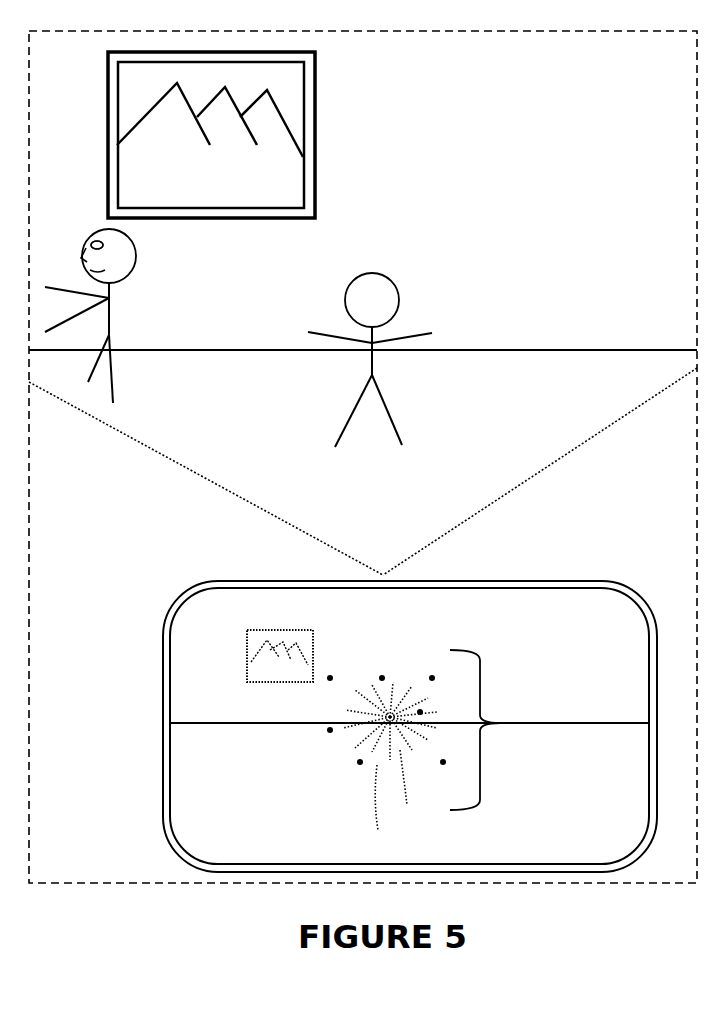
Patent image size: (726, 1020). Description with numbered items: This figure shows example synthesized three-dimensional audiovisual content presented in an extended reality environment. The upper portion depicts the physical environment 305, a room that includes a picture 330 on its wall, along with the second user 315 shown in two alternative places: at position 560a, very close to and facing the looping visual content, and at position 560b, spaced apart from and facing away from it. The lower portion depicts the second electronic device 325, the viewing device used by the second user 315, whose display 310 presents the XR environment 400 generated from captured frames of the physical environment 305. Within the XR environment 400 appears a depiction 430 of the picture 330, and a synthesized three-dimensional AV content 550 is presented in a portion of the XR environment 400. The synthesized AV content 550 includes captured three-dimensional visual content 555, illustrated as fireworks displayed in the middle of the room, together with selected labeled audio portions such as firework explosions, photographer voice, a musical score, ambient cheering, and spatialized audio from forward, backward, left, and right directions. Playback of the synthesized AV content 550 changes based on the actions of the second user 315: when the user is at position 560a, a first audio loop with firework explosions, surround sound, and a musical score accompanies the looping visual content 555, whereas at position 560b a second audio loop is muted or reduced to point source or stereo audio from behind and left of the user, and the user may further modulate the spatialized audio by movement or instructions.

The physical environment 305 is at (561, 70).
The picture 330 is at (315, 130).
The second user 315 is at (88, 243).
The position 560a is at (434, 293).
The position 560b is at (160, 265).
The second electronic device 325 is at (163, 620).
The display 310 is at (169, 695).
The XR environment 400 is at (226, 618).
The depiction of the picture 430 is at (313, 660).
The synthesized 3D AV content 550 is at (312, 760).
The captured 3D visual content 555 is at (495, 730).